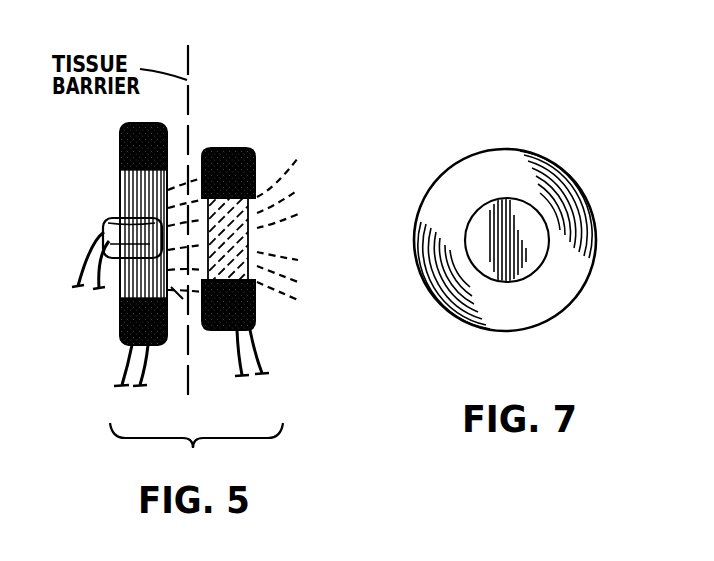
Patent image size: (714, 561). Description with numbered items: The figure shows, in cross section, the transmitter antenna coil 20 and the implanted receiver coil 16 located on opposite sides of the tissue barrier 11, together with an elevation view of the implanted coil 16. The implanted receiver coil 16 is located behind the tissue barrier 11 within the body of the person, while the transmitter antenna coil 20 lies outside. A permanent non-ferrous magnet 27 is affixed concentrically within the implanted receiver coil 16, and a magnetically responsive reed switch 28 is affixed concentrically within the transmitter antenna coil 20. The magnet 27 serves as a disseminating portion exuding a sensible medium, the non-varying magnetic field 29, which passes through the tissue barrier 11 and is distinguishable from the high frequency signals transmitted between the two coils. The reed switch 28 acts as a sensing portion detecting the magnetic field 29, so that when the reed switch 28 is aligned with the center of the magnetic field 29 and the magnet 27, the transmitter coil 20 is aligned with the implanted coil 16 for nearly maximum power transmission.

In FIG. 5, the tissue barrier 11 is at (188, 120).
In FIG. 5, the implanted receiver coil 16 is at (223, 148).
In FIG. 7, the implanted receiver coil 16 is at (567, 185).
In FIG. 5, the transmitter antenna coil 20 is at (125, 356).
In FIG. 5, the non-ferrous magnet 27 is at (252, 239).
In FIG. 7, the non-ferrous magnet 27 is at (537, 260).
In FIG. 5, the magnetic reed switch 28 is at (112, 222).
In FIG. 5, the magnetic field 29 is at (178, 298).